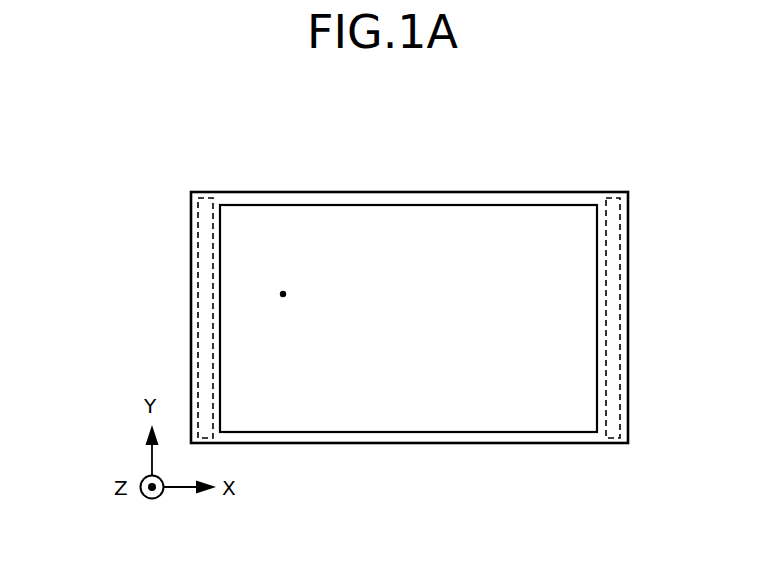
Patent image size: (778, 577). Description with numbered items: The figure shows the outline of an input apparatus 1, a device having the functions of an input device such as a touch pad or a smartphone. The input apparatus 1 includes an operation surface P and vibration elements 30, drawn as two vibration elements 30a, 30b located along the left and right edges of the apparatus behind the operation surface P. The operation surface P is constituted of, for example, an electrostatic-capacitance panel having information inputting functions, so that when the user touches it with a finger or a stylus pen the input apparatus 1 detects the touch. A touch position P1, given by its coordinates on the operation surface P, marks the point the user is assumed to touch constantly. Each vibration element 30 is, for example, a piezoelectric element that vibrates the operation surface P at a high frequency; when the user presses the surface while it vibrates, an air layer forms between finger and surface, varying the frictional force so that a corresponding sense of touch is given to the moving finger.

The input apparatus 1 is at (350, 151).
The operation surface P is at (521, 223).
The touch position P1 is at (351, 295).
The vibration element 30 is at (409, 373).
The vibration element 30a is at (206, 440).
The vibration element 30b is at (612, 440).